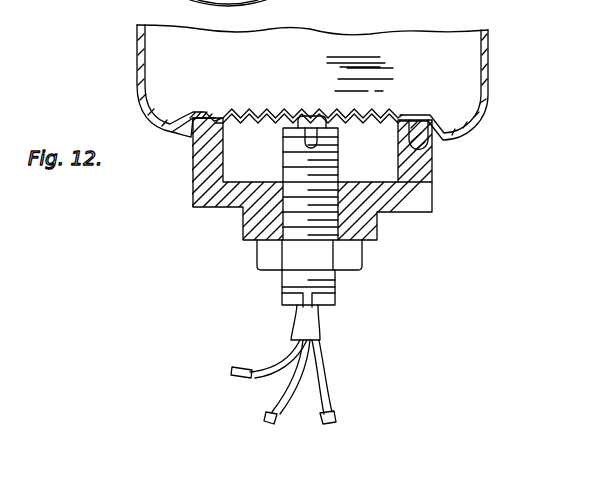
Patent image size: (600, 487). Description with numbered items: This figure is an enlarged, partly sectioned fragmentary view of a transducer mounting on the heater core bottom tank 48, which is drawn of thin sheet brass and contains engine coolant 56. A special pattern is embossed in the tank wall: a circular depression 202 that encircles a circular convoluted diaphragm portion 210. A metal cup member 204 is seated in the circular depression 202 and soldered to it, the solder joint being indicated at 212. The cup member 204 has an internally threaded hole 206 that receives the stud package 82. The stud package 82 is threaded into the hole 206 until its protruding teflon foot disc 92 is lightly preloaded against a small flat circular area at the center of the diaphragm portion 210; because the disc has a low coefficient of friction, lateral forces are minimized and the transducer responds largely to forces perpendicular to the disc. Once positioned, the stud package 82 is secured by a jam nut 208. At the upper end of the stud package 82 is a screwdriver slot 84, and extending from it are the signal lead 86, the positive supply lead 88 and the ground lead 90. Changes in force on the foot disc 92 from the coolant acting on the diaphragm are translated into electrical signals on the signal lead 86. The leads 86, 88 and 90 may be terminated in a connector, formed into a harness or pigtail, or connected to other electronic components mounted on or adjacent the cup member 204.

The heater core bottom tank 48 is at (137, 50).
The engine coolant 56 is at (347, 68).
The stud package 82 is at (336, 287).
The screwdriver slot 84 is at (320, 323).
The signal lead 86 is at (238, 377).
The positive supply lead 88 is at (270, 422).
The ground lead 90 is at (331, 419).
The teflon foot disc 92 is at (338, 132).
The circular depression 202 is at (425, 162).
The metal cup member 204 is at (425, 190).
The internally threaded hole 206 is at (318, 226).
The jam nut 208 is at (362, 256).
The circular convoluted diaphragm portion 210 is at (342, 113).
The solder joint 212 is at (445, 143).